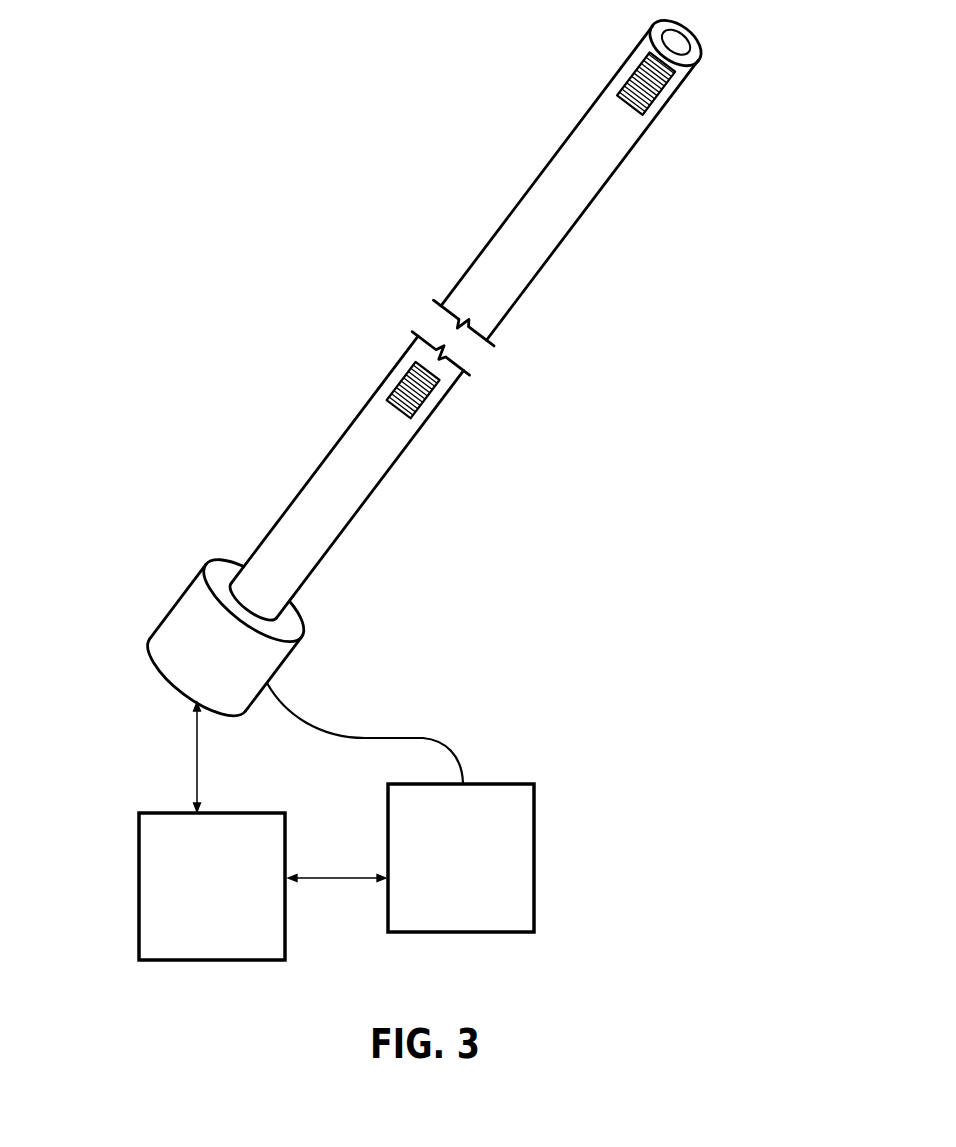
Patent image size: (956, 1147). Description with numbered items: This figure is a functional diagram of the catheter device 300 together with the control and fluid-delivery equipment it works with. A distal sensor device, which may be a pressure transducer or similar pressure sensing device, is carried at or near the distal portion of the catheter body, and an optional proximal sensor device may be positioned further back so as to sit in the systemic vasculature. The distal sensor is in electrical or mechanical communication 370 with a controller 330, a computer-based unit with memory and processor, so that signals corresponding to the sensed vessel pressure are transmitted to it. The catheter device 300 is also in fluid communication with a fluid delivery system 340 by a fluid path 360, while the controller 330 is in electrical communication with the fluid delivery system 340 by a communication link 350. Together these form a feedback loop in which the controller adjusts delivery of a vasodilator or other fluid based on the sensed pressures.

The catheter device 300 is at (434, 365).
The controller 330 is at (227, 899).
The fluid delivery system 340 is at (475, 870).
The communication link 350 is at (342, 878).
The fluid path 360 is at (423, 738).
The electrical or mechanical communication 370 is at (197, 763).